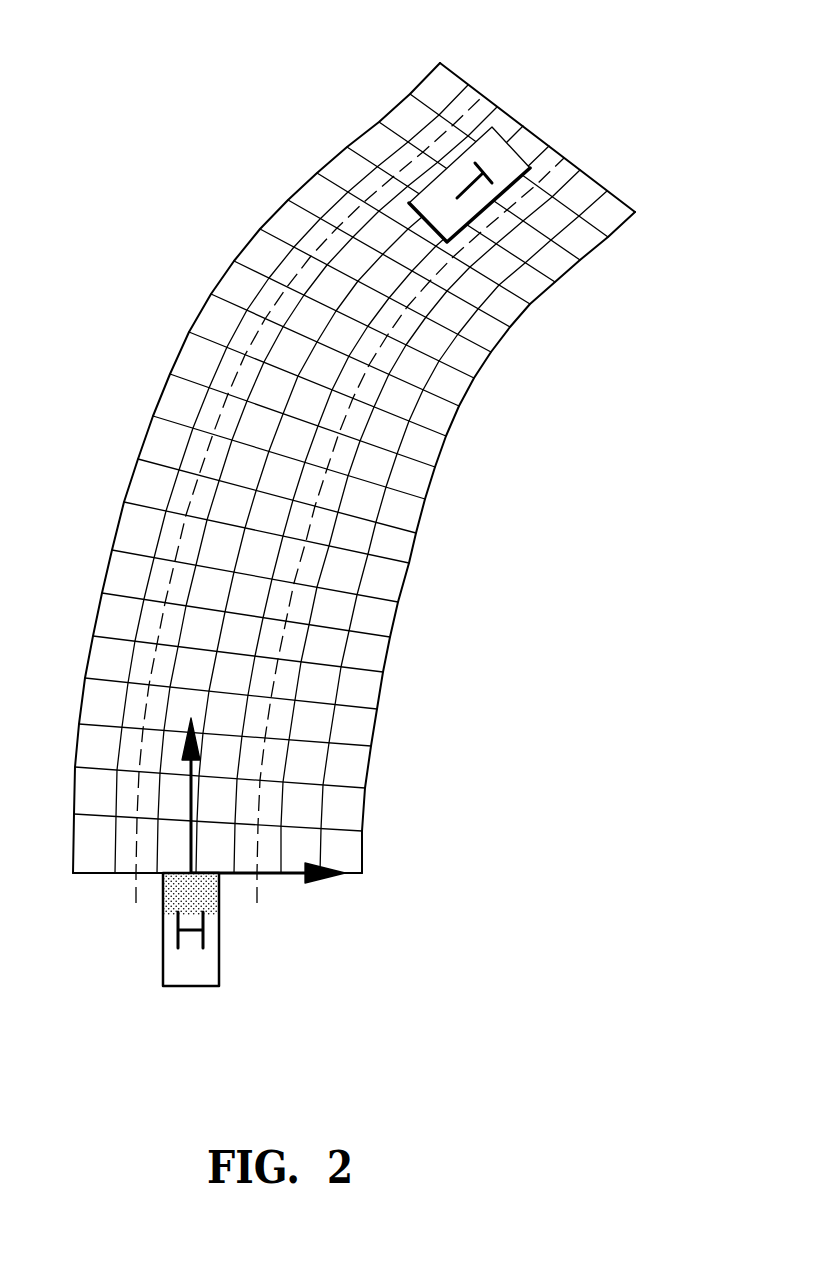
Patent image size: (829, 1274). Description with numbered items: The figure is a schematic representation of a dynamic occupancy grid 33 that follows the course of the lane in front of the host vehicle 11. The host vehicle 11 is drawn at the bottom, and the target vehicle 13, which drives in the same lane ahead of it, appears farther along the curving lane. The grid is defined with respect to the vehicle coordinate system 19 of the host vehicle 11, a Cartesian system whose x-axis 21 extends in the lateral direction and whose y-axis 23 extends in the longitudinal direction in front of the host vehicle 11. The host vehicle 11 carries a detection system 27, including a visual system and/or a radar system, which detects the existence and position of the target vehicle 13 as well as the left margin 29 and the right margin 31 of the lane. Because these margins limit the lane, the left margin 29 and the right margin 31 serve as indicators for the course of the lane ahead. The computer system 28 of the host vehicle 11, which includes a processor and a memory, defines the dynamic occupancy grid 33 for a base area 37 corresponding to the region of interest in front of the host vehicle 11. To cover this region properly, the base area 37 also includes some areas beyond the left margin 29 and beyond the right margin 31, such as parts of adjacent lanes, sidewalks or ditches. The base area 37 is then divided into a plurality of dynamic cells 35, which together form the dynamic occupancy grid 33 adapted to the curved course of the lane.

The host vehicle 11 is at (185, 977).
The target vehicle 13 is at (497, 150).
The vehicle coordinate system 19 is at (357, 900).
The x-axis 21 is at (287, 880).
The y-axis 23 is at (191, 798).
The detection system 27 is at (170, 898).
The computer system 28 is at (207, 893).
The left margin 29 is at (297, 287).
The right margin 31 is at (412, 315).
The dynamic occupancy grid 33 is at (460, 608).
The dynamic cells 35 is at (432, 443).
The base area 37 is at (322, 167).